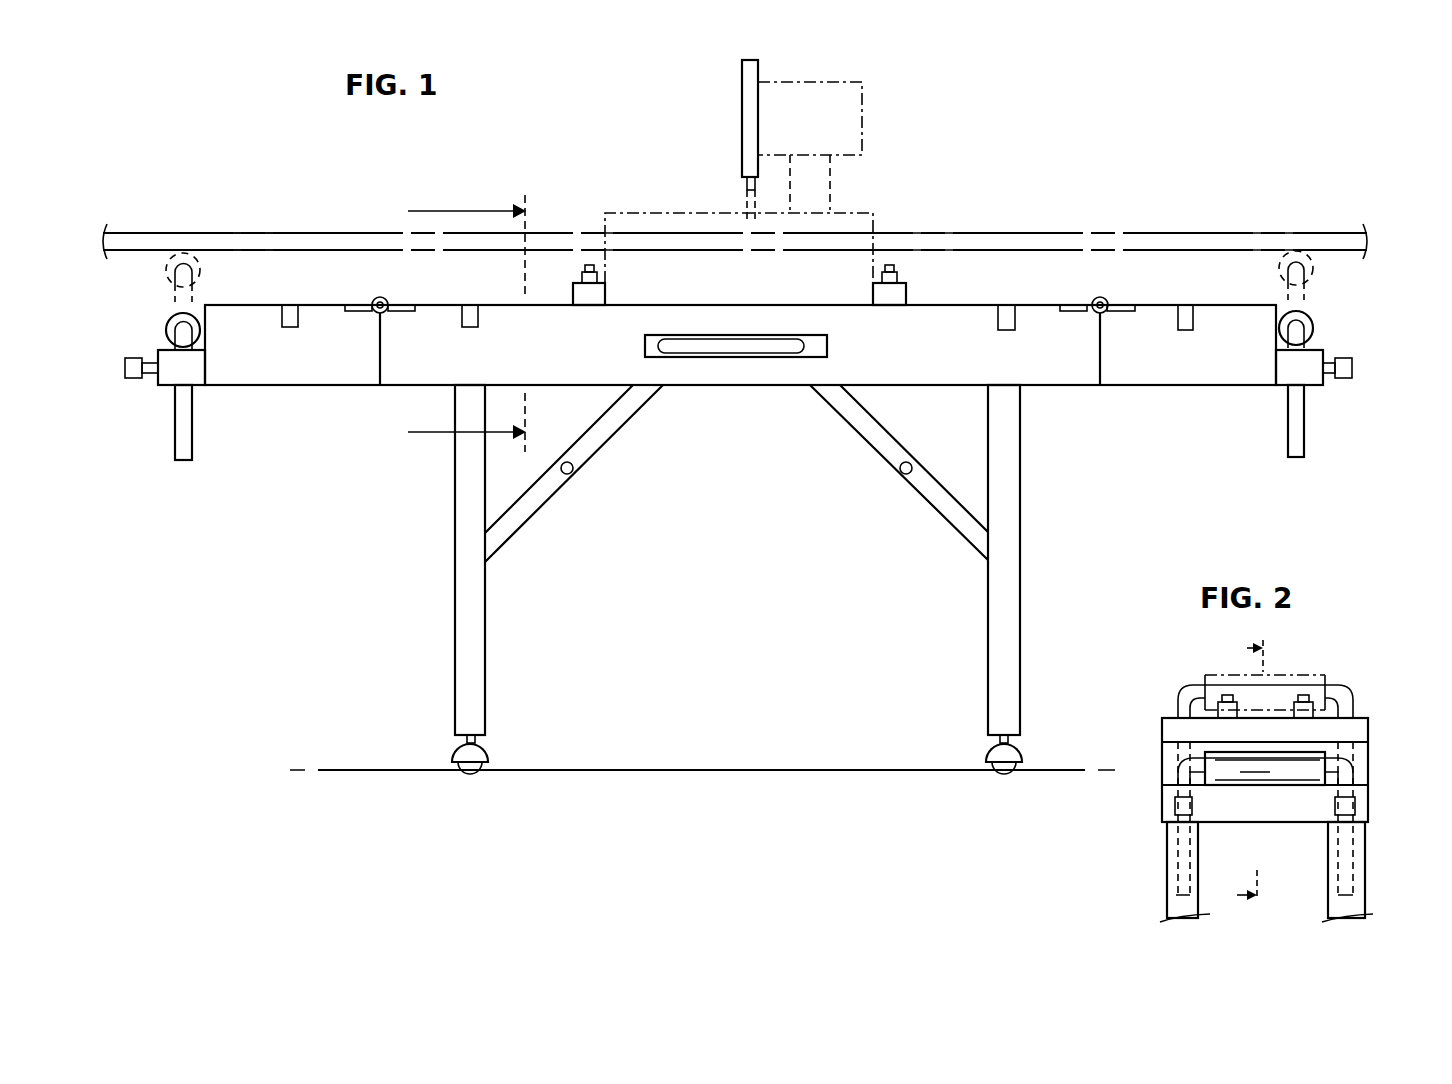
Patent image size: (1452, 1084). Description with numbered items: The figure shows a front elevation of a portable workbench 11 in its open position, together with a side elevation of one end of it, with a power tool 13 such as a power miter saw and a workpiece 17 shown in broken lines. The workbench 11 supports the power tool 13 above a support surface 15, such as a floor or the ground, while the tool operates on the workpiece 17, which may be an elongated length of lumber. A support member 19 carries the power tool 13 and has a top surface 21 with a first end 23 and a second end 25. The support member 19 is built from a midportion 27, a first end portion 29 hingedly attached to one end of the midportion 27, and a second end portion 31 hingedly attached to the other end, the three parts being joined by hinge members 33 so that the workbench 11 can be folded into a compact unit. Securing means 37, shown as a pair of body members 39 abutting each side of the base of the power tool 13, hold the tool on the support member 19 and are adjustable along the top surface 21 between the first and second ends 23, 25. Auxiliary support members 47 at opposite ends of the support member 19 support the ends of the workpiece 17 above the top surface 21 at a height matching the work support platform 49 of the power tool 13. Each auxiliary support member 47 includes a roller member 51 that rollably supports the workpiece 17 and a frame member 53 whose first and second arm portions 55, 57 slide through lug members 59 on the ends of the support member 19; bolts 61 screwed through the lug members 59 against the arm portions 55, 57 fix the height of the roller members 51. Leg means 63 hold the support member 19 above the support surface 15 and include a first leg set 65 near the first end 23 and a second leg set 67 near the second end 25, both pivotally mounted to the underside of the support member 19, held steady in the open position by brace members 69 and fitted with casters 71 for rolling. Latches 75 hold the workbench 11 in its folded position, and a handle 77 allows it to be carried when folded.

In FIG. 1, the portable workbench 11 is at (1230, 110).
In FIG. 1, the power tool 13 is at (843, 135).
In FIG. 1, the support surface 15 is at (365, 768).
In FIG. 1, the workpiece 17 is at (1032, 243).
In FIG. 1, the support member 19 is at (975, 296).
In FIG. 1, the top surface 21 is at (940, 300).
In FIG. 1, the first end 23 is at (1298, 226).
In FIG. 1, the second end 25 is at (180, 218).
In FIG. 1, the midportion 27 is at (638, 302).
In FIG. 1, the first end portion 29 is at (1218, 297).
In FIG. 1, the second end portion 31 is at (262, 300).
In FIG. 1, the hinge members 33 is at (378, 297).
In FIG. 1, the securing means 37 is at (570, 250).
In FIG. 1, the body member 39 is at (576, 284).
In FIG. 1, the auxiliary support members 47 is at (148, 324).
In FIG. 2, the auxiliary support members 47 is at (1382, 753).
In FIG. 1, the work support platform 49 is at (661, 246).
In FIG. 1, the roller member 51 is at (167, 320).
In FIG. 2, the roller member 51 is at (1215, 760).
In FIG. 1, the frame member 53 is at (741, 389).
In FIG. 2, the frame member 53 is at (1262, 872).
In FIG. 1, the first arm portion 55 is at (190, 440).
In FIG. 2, the first arm portion 55 is at (1182, 870).
In FIG. 2, the second arm portion 57 is at (1345, 888).
In FIG. 1, the lug members 59 is at (170, 370).
In FIG. 2, the lug members 59 is at (1283, 803).
In FIG. 1, the bolts 61 is at (125, 366).
In FIG. 2, the bolts 61 is at (1180, 806).
In FIG. 1, the leg means 63 is at (724, 579).
In FIG. 1, the first leg set 65 is at (1005, 650).
In FIG. 1, the second leg set 67 is at (478, 658).
In FIG. 1, the brace members 69 is at (612, 430).
In FIG. 1, the casters 71 is at (474, 755).
In FIG. 1, the latches 75 is at (290, 305).
In FIG. 1, the handle 77 is at (752, 352).